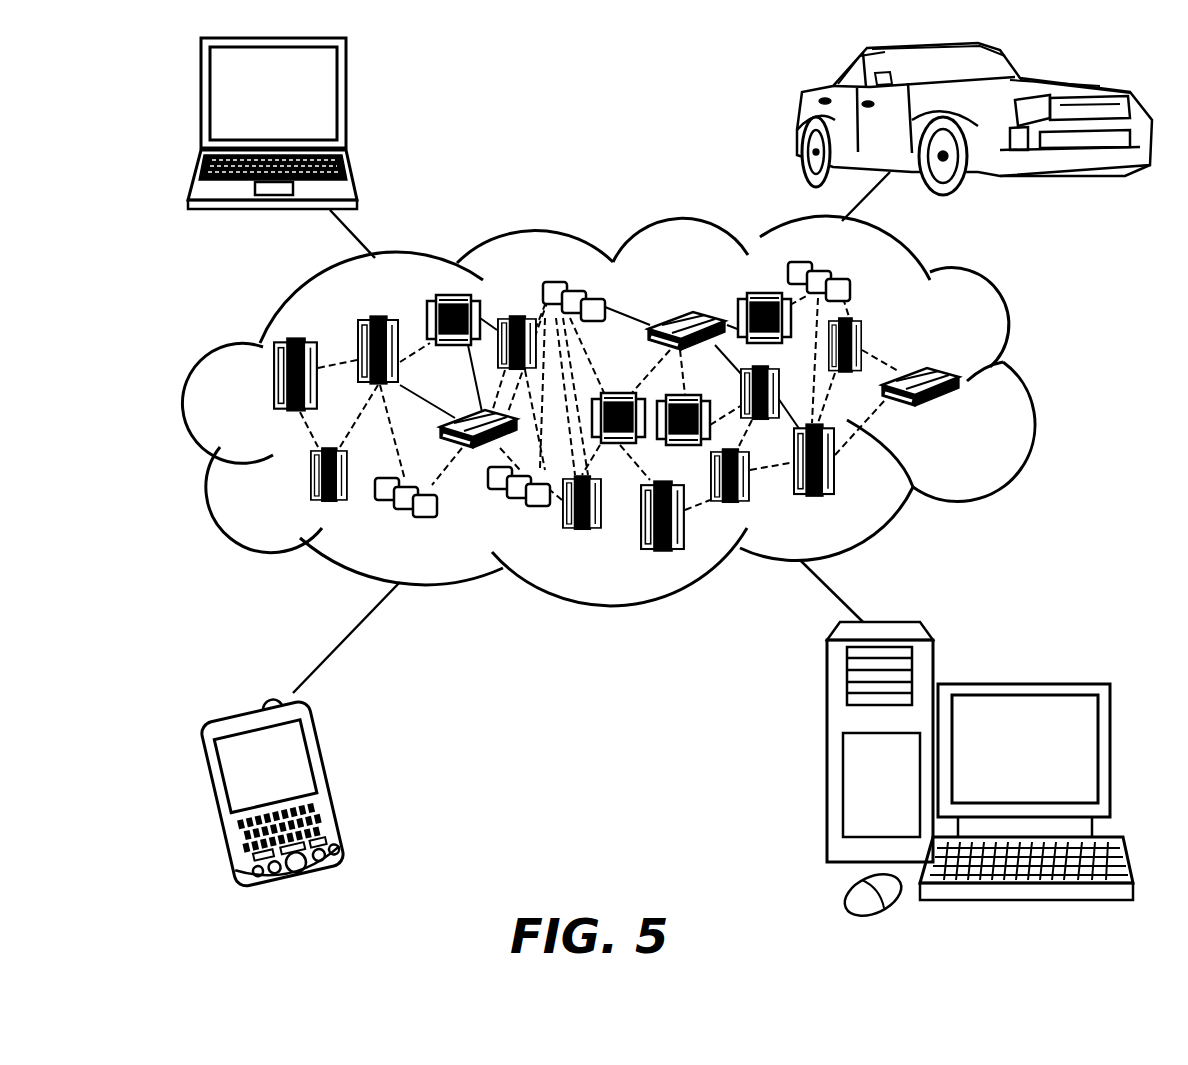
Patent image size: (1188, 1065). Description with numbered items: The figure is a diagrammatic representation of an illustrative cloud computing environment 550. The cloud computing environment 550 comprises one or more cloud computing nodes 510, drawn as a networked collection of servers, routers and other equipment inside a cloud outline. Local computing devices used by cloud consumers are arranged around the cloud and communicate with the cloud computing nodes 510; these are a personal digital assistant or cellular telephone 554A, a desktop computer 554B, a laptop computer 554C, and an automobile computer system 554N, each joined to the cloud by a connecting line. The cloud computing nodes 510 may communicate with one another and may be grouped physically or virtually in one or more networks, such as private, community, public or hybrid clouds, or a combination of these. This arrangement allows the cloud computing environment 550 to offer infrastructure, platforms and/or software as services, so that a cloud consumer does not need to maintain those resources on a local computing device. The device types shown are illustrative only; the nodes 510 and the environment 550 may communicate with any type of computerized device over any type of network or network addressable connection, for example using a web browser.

The cloud computing environment 550 is at (1023, 385).
The cloud computing nodes 510 is at (970, 418).
The personal digital assistant (PDA) or cellular telephone 554A is at (333, 780).
The desktop computer 554B is at (1025, 683).
The laptop computer 554C is at (346, 100).
The automobile computer system 554N is at (797, 118).